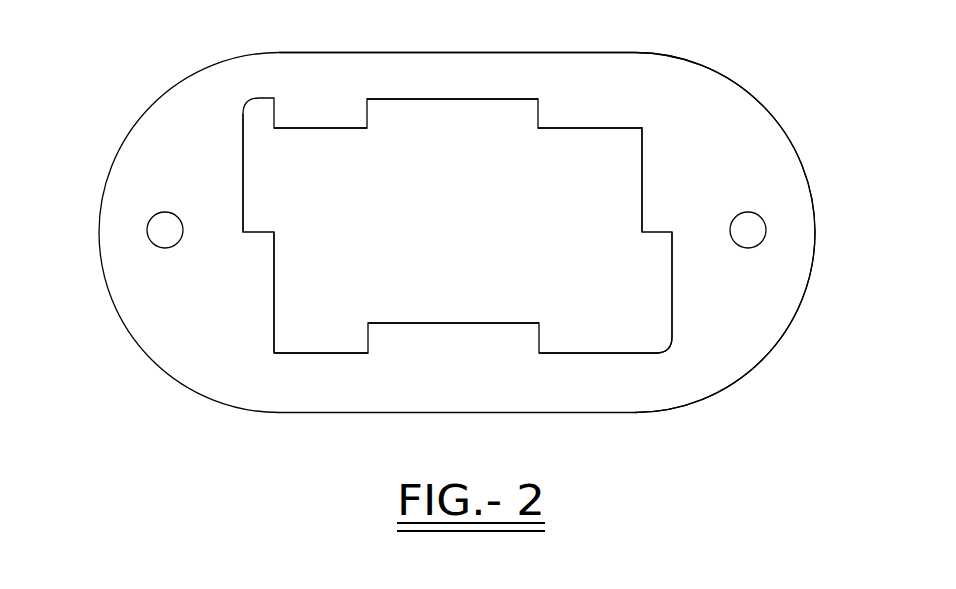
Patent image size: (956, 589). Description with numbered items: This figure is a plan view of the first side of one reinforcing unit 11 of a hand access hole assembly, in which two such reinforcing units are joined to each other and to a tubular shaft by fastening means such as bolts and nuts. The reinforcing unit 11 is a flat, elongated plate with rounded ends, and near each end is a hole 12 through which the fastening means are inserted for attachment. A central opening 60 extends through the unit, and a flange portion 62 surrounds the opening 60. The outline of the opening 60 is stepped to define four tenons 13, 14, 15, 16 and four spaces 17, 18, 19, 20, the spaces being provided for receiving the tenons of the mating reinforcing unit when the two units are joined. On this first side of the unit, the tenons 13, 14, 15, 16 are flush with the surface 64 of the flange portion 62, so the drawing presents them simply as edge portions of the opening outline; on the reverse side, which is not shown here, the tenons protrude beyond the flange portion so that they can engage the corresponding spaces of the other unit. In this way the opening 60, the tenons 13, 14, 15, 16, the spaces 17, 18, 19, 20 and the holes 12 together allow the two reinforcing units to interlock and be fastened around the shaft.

The reinforcing unit 11 is at (168, 72).
The holes 12 is at (165, 230).
The tenon 13 is at (438, 322).
The tenon 14 is at (274, 265).
The tenon 15 is at (335, 129).
The tenon 16 is at (642, 177).
The space 17 is at (455, 100).
The space 18 is at (243, 193).
The space 19 is at (340, 351).
The space 20 is at (672, 300).
The central opening 60 is at (521, 125).
The flange portion 62 is at (789, 120).
The surface 64 is at (700, 104).